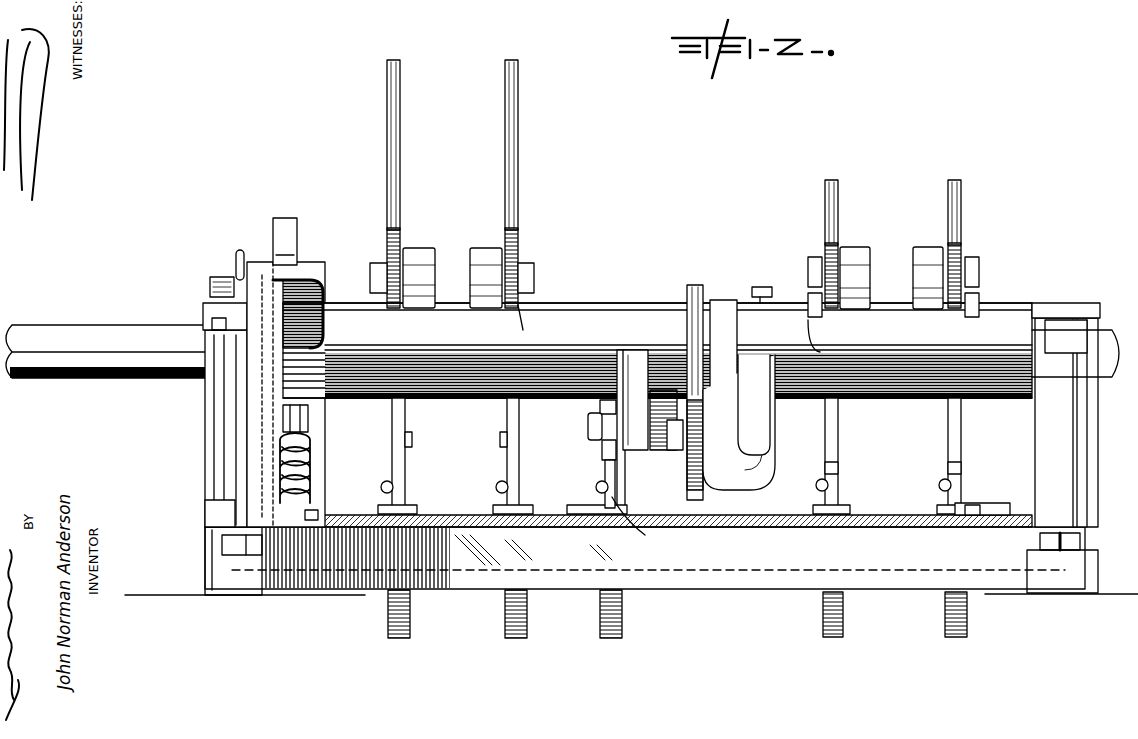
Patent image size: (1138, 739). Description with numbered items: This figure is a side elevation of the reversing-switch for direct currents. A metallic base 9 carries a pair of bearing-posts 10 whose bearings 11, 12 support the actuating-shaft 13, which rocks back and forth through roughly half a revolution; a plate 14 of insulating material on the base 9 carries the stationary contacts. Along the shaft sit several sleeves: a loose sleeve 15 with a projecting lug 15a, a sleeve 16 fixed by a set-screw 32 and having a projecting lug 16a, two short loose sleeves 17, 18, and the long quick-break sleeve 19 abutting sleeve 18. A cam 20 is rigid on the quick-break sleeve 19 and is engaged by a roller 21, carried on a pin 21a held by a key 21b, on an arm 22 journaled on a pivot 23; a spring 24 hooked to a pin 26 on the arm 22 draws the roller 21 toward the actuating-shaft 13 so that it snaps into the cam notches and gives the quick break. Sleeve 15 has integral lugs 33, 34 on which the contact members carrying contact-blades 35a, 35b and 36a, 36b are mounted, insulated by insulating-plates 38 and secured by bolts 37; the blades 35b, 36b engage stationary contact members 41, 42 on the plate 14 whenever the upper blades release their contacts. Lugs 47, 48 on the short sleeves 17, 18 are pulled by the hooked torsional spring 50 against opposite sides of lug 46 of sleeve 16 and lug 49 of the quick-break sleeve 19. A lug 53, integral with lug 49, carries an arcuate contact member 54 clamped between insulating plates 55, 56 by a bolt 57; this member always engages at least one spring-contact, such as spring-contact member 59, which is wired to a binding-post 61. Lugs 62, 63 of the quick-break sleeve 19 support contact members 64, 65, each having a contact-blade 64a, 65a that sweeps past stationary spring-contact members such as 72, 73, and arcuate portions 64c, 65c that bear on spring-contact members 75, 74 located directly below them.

The metallic base 9 is at (1028, 556).
The bearing-posts 10 is at (651, 422).
The bearing 11 is at (1068, 306).
The bearing 12 is at (205, 310).
The actuating-shaft 13 is at (105, 351).
The plate of insulating material 14 is at (1012, 503).
The sleeve 15 is at (1009, 331).
The projecting lug 15a is at (814, 414).
The sleeve 16 is at (781, 331).
The projecting lug 16a is at (815, 325).
The short sleeve 17 is at (723, 350).
The short sleeve 18 is at (669, 331).
The quick-break sleeve 19 is at (567, 331).
The cam 20 is at (298, 245).
The roller 21 is at (292, 268).
The pin 21a is at (212, 285).
The key 21b is at (236, 258).
The arm 22 is at (284, 394).
The pivot 23 is at (320, 512).
The spring 24 is at (312, 490).
The pin 26 is at (308, 416).
The set-screw 32 is at (762, 287).
The lug 33 is at (928, 278).
The lug 34 is at (855, 278).
The contact-blade 35a is at (961, 206).
The contact-blade 35b is at (963, 418).
The contact-blade 36a is at (838, 196).
The contact-blade 36b is at (840, 424).
The bolts 37 is at (810, 258).
The insulating-plate 38 is at (825, 250).
The stationary contact member 41 is at (963, 462).
The stationary contact member 42 is at (840, 462).
The lug 46 is at (756, 463).
The lug 47 is at (710, 484).
The lug 48 is at (674, 452).
The lug 49 is at (658, 452).
The torsional spring 50 is at (694, 285).
The lug 53 is at (632, 452).
The arcuate contact member 54 is at (602, 454).
The insulating plate 55 is at (600, 414).
The insulating plate 56 is at (617, 400).
The bolt 57 is at (588, 432).
The spring-contact member 59 is at (605, 470).
The binding-post 61 is at (632, 524).
The lug 62 is at (482, 247).
The lug 63 is at (420, 247).
The contact member 64 is at (520, 236).
The contact-blade 64a is at (518, 88).
The arcuate-shaped portion 64c is at (528, 312).
The contact member 65 is at (387, 240).
The contact-blade 65a is at (400, 80).
The arcuate portion 65c is at (383, 320).
The spring-contact member 72 is at (406, 414).
The spring-contact member 73 is at (506, 414).
The spring-contact member 74 is at (413, 441).
The spring-contact member 75 is at (500, 441).